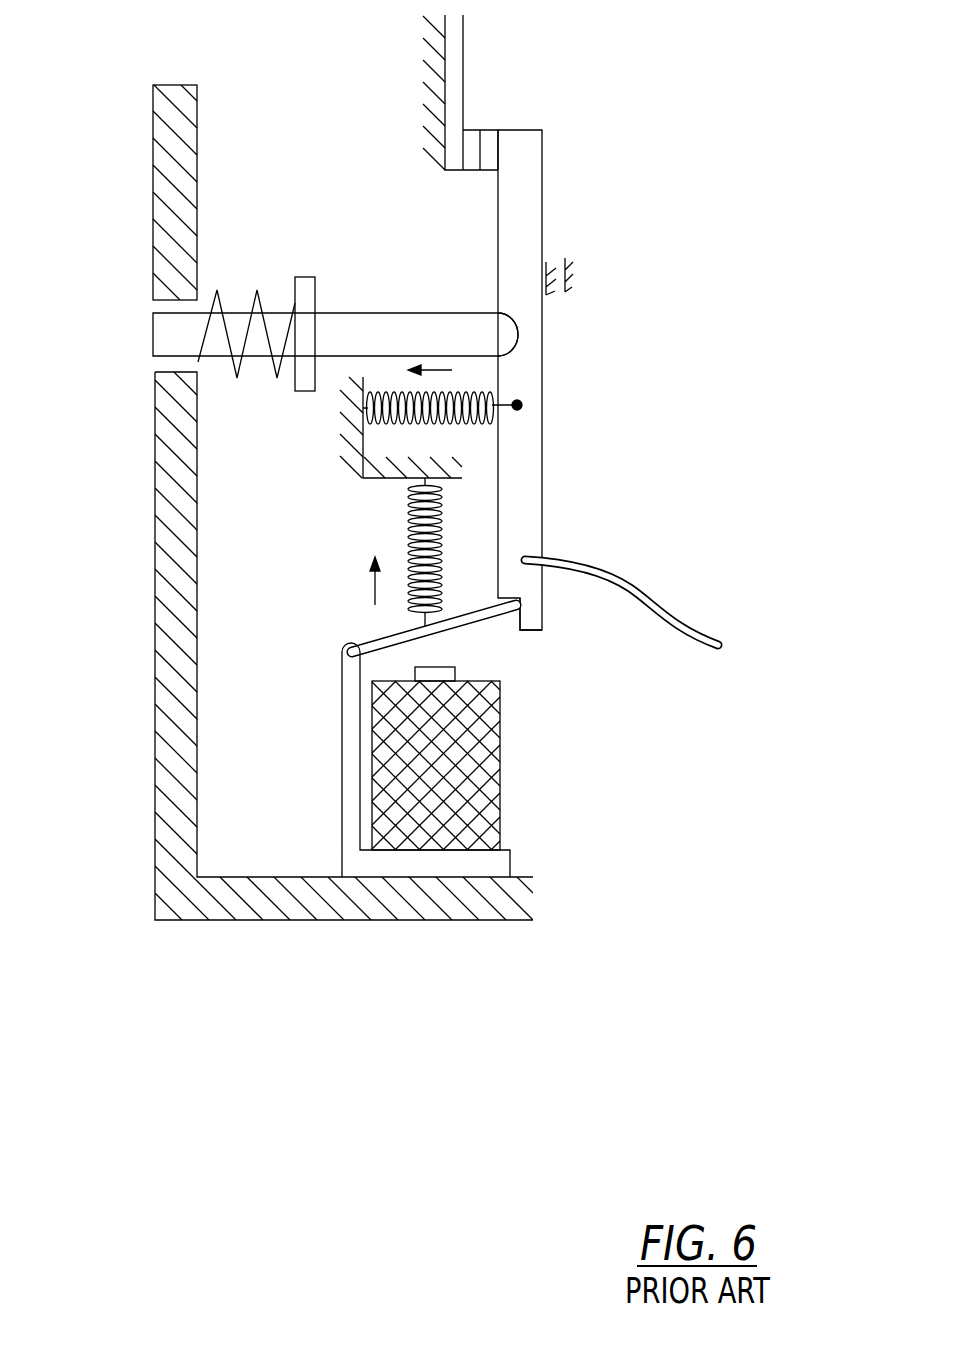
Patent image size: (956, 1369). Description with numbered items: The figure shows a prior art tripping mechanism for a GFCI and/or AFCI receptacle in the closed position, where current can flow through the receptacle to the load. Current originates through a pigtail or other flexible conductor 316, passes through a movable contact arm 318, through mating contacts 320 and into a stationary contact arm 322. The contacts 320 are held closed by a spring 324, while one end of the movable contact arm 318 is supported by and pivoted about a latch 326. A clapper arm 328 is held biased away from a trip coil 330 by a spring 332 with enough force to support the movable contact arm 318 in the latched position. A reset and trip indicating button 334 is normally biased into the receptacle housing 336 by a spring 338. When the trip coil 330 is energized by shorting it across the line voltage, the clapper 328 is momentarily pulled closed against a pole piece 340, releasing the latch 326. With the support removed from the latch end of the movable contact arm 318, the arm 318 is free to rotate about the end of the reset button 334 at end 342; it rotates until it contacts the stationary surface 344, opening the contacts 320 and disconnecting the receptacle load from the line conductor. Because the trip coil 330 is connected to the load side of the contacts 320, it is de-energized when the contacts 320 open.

The flexible conductor 316 is at (598, 567).
The movable contact arm 318 is at (535, 148).
The mating contacts 320 is at (470, 172).
The stationary contact arm 322 is at (457, 37).
The spring 324 is at (452, 426).
The latch 326 is at (533, 611).
The clapper arm 328 is at (373, 638).
The trip coil 330 is at (500, 797).
The spring 332 is at (408, 562).
The reset and trip indicating button 334 is at (163, 333).
The receptacle housing 336 is at (160, 142).
The spring 338 is at (216, 296).
The pole piece 340 is at (458, 672).
The end 342 is at (518, 336).
The stationary surface 344 is at (545, 268).